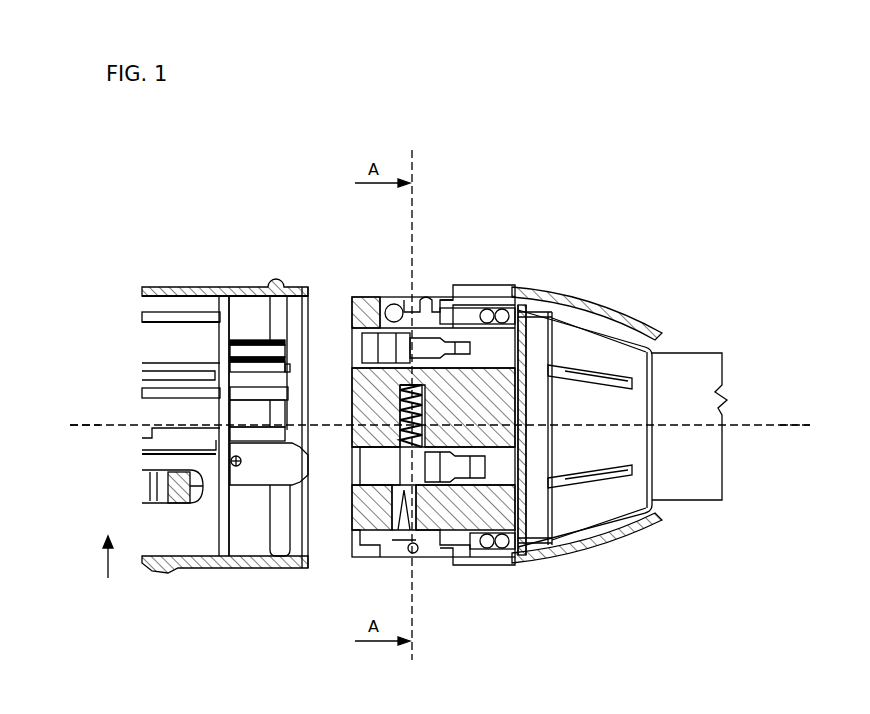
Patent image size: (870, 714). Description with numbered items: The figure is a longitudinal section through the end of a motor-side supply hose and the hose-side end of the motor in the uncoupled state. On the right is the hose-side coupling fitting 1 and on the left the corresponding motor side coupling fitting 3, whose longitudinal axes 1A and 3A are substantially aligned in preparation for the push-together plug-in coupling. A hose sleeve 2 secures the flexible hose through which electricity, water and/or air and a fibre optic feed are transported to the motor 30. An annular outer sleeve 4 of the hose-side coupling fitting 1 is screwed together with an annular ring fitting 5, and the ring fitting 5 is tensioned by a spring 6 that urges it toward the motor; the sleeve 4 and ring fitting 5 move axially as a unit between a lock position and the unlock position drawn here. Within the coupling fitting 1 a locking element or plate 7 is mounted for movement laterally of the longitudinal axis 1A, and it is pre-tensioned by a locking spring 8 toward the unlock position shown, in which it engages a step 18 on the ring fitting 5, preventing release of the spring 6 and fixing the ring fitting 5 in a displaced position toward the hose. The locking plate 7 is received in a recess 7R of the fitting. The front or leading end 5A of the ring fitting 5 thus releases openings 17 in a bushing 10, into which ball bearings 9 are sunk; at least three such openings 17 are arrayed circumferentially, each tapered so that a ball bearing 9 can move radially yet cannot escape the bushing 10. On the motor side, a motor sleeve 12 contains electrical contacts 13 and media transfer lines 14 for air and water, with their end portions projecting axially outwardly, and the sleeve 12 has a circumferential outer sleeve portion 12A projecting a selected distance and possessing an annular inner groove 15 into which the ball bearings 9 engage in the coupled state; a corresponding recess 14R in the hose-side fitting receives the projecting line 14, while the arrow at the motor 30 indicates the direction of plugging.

The hose-side coupling fitting 1 is at (559, 196).
The longitudinal axis 1A is at (799, 433).
The hose sleeve 2 is at (694, 470).
The motor side coupling fitting 3 is at (218, 182).
The longitudinal axis 3A is at (92, 432).
The annular outer sleeve 4 is at (575, 300).
The annular ring fitting 5 is at (470, 556).
The front or leading end 5A is at (430, 296).
The spring 6 is at (522, 572).
The locking element or plate 7 is at (421, 560).
The locking recess 7R is at (400, 492).
The locking spring 8 is at (395, 398).
The ball bearings or bearing members 9 is at (391, 305).
The bushing 10 is at (356, 300).
The motor sleeve 12 is at (195, 565).
The circumferential outer sleeve portion 12A is at (246, 292).
The electrical contacts 13 is at (258, 365).
The media transfer lines 14 is at (240, 345).
The coding recess 14R is at (385, 477).
The annular inner groove 15 is at (280, 540).
The openings 17 is at (402, 296).
The step 18 is at (456, 566).
The motor 30 is at (104, 570).